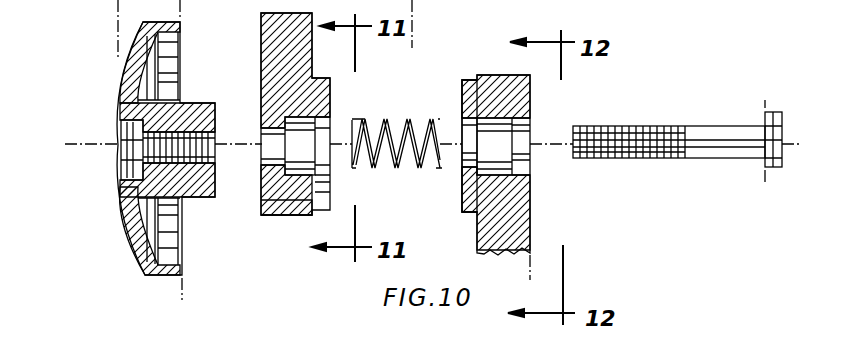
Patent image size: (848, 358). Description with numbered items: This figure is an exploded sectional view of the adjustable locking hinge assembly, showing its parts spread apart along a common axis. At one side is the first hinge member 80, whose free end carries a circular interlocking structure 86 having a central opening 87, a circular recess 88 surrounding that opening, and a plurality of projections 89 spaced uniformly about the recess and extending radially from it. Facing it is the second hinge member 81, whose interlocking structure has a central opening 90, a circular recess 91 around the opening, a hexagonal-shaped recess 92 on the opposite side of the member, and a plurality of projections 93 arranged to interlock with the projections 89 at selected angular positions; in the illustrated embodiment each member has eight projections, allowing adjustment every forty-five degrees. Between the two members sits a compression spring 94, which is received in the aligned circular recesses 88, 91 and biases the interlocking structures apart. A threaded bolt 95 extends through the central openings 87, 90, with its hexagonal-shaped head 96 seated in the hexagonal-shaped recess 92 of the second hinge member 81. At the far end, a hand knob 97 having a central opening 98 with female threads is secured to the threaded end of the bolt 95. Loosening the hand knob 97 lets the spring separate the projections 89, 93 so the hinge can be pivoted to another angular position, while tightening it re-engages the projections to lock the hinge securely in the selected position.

The first hinge member 80 is at (263, 38).
The second hinge member 81 is at (502, 84).
The circular interlocking structure 86 is at (276, 193).
The central opening 87 is at (263, 133).
The circular recess 88 is at (302, 122).
The projections 89 is at (330, 190).
The central opening 90 is at (525, 133).
The circular recess 91 is at (463, 130).
The hexagonal-shaped recess 92 is at (532, 160).
The projections 93 is at (463, 86).
The compression spring 94 is at (405, 165).
The threaded bolt 95 is at (700, 128).
The hexagonal-shaped head 96 is at (778, 116).
The hand knob 97 is at (119, 100).
The central opening 98 is at (120, 150).